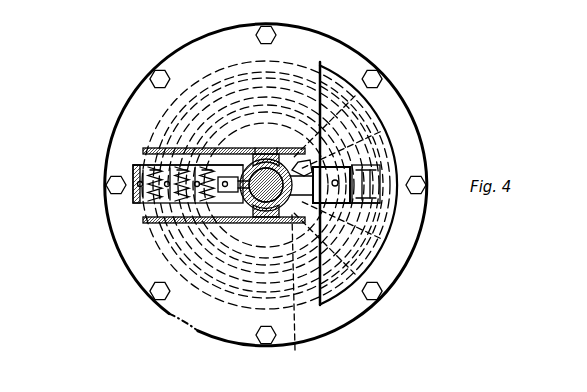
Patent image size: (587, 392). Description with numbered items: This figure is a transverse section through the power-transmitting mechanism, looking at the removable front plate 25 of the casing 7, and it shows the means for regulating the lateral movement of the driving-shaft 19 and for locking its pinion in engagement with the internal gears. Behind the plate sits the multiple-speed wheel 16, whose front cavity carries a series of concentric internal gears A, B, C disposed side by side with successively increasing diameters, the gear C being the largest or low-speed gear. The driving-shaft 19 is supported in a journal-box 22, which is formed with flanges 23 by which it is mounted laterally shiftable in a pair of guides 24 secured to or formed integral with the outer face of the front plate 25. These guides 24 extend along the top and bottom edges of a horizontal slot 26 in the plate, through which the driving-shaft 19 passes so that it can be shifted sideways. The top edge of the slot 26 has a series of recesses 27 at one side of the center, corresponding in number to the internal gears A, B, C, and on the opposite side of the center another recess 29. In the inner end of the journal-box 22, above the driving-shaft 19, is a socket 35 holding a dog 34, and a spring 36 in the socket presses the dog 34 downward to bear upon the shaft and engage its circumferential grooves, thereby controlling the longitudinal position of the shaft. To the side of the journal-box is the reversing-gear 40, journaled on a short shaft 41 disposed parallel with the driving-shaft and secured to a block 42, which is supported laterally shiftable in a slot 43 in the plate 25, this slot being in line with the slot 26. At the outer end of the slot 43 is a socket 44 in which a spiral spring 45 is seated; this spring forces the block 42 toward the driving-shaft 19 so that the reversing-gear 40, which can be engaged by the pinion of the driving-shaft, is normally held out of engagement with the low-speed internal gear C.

The casing 7 is at (375, 165).
The multiple-speed wheel 16 is at (133, 181).
The driving-shaft 19 is at (345, 168).
The journal-box 22 is at (372, 160).
The flanges 23 is at (266, 152).
The guides 24 is at (167, 149).
The front plate 25 is at (266, 185).
The horizontal slot 26 is at (133, 172).
The recesses 27 is at (213, 148).
The recess 29 is at (328, 162).
The dog 34 is at (322, 60).
The socket 35 is at (275, 160).
The spring 36 is at (263, 155).
The reversing-gear 40 is at (294, 295).
The short shaft 41 is at (380, 205).
The block 42 is at (340, 206).
The slot 43 is at (362, 205).
The socket 44 is at (425, 152).
The spiral spring 45 is at (427, 143).
The internal gear A is at (150, 204).
The internal gear B is at (150, 196).
The internal gear C is at (150, 188).